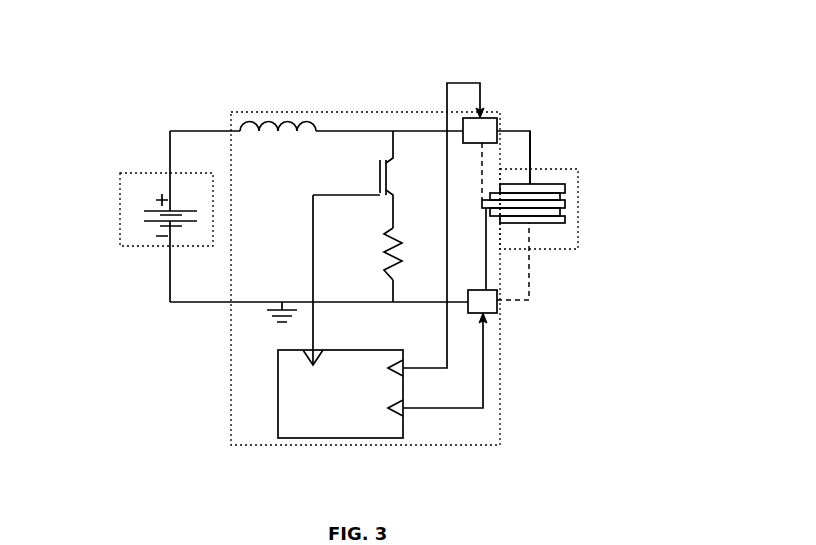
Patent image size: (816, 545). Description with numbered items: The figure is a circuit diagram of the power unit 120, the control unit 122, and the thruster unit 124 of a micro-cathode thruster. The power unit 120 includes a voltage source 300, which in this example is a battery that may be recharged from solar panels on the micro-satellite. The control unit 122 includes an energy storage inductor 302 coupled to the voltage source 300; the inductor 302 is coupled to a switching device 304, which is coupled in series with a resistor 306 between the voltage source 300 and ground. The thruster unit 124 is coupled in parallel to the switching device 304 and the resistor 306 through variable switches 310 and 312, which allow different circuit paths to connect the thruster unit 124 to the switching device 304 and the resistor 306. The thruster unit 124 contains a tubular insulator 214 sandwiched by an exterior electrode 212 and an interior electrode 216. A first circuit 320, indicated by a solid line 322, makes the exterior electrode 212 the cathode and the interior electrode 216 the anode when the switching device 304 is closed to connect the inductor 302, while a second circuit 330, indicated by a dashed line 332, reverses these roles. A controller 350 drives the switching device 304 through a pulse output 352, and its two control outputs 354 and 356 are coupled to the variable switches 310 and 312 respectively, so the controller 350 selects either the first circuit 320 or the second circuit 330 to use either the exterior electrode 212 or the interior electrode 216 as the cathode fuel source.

The power unit 120 is at (121, 224).
The voltage source 300 is at (158, 197).
The control unit 122 is at (296, 447).
The thruster unit 124 is at (580, 245).
The exterior electrode 212 is at (565, 186).
The tubular insulator 214 is at (562, 196).
The interior electrode 216 is at (568, 205).
The energy storage inductor 302 is at (240, 128).
The switching device 304 is at (380, 165).
The resistor 306 is at (393, 250).
The variable switch 310 is at (463, 124).
The variable switch 312 is at (499, 313).
The first circuit 320 is at (530, 145).
The solid line 322 is at (488, 267).
The second circuit 330 is at (530, 262).
The dashed line 332 is at (482, 160).
The controller 350 is at (278, 397).
The pulse output 352 is at (313, 362).
The control output 354 is at (402, 410).
The control output 356 is at (402, 372).